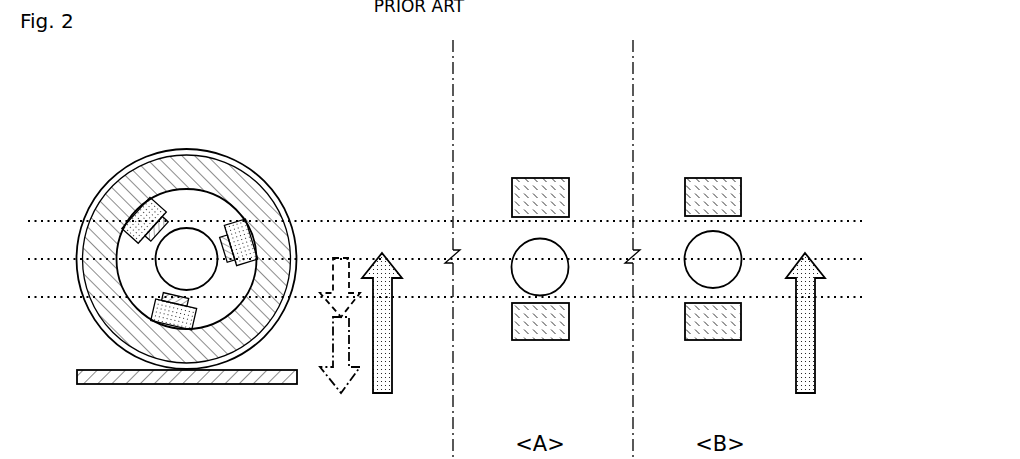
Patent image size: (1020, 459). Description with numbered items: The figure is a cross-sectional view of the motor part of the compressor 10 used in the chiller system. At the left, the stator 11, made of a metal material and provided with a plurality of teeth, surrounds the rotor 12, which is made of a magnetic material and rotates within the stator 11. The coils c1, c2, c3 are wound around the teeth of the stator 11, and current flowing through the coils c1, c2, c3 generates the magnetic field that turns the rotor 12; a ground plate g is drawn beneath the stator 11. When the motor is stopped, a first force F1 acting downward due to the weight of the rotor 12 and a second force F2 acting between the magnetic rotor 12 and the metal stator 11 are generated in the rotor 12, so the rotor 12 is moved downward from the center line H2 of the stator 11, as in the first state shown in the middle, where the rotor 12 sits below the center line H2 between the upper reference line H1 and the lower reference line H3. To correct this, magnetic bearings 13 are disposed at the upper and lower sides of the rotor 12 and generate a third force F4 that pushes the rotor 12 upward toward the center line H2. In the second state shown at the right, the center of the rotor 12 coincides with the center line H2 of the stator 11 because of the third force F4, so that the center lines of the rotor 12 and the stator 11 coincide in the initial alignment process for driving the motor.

The compressor 10 is at (419, 250).
The stator 11 is at (148, 182).
The rotor 12 is at (186, 243).
The magnetic bearings 13 is at (541, 190).
The coil c1 is at (113, 192).
The coil c2 is at (241, 238).
The coil c3 is at (173, 322).
The ground plate g is at (113, 385).
The first force F1 is at (342, 258).
The second force F2 is at (341, 395).
The third force F4 is at (382, 395).
The first height H1 is at (467, 222).
The center line H2 is at (467, 260).
The third height H3 is at (467, 298).